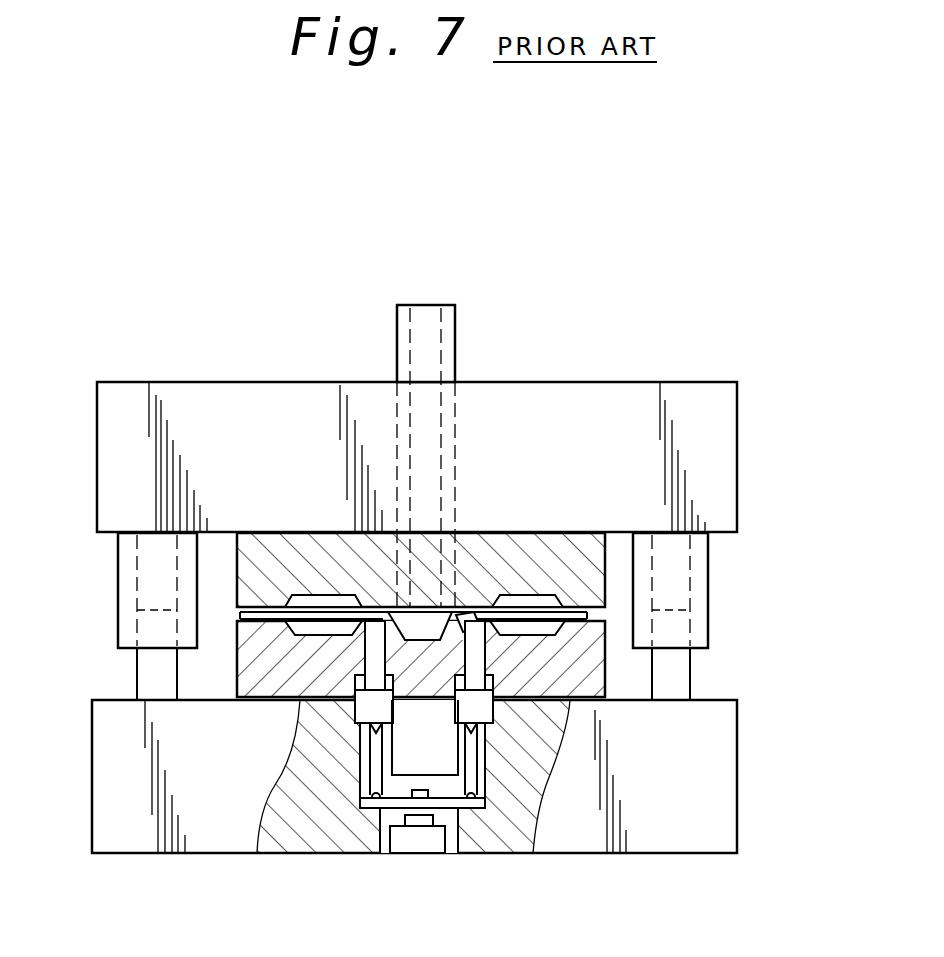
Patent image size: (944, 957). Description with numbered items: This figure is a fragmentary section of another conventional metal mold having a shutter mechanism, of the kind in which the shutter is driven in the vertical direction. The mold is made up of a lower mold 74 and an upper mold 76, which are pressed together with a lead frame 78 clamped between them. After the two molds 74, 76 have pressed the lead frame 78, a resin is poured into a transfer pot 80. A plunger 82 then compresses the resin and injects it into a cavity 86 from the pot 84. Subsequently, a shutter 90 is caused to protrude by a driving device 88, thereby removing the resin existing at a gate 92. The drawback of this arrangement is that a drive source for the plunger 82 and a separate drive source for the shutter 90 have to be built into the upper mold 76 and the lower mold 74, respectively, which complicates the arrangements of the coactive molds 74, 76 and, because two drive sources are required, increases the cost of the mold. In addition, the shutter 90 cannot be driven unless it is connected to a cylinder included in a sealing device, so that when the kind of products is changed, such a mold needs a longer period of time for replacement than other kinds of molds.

The lower mold 74 is at (685, 820).
The upper mold 76 is at (712, 447).
The lead frame 78 is at (237, 617).
The transfer pot 80 is at (455, 332).
The plunger 82 is at (412, 332).
The pot 84 is at (425, 600).
The cavity 86 is at (535, 603).
The driving device 88 is at (508, 812).
The shutter 90 is at (467, 663).
The gate 92 is at (460, 603).